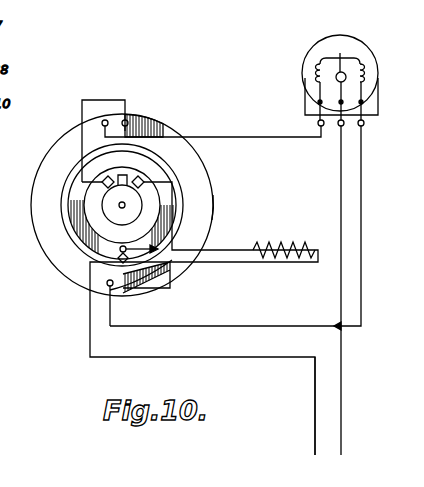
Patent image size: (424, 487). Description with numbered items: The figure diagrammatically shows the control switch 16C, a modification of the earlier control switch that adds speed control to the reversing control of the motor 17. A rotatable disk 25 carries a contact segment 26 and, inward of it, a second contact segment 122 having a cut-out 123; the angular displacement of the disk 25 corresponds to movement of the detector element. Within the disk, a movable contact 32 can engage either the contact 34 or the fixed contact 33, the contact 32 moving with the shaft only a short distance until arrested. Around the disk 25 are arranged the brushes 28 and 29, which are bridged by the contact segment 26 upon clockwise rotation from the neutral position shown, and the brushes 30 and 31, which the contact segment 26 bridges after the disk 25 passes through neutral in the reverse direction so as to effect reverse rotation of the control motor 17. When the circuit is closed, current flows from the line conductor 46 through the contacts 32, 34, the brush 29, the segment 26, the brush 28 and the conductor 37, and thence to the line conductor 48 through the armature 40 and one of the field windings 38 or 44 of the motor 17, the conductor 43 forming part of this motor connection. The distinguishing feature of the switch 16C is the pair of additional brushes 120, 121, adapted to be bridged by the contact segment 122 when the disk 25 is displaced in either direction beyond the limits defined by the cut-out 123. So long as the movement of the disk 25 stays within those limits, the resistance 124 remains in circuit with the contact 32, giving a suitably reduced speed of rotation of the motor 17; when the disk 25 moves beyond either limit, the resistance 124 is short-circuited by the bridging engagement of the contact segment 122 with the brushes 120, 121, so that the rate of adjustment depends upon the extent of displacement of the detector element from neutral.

The control motor 17 is at (353, 49).
The field winding 38 is at (363, 70).
The field winding 44 is at (318, 72).
The armature 40 is at (337, 80).
The brush 30 is at (105, 120).
The brush 31 is at (130, 117).
The conductor 43 is at (236, 137).
The fixed contact 33 is at (108, 176).
The contact 34 is at (138, 176).
The contact 32 is at (102, 204).
The contact segment 26 is at (202, 190).
The control switch 16C is at (214, 210).
The resistance 124 is at (284, 247).
The contact segment 122 is at (72, 203).
The disk 25 is at (36, 238).
The brush 121 is at (126, 241).
The cut-out 123 is at (118, 260).
The brush 120 is at (128, 276).
The brush 28 is at (108, 286).
The brush 29 is at (115, 292).
The conductor 37 is at (232, 320).
The line conductor 46 is at (315, 435).
The line conductor 48 is at (345, 413).